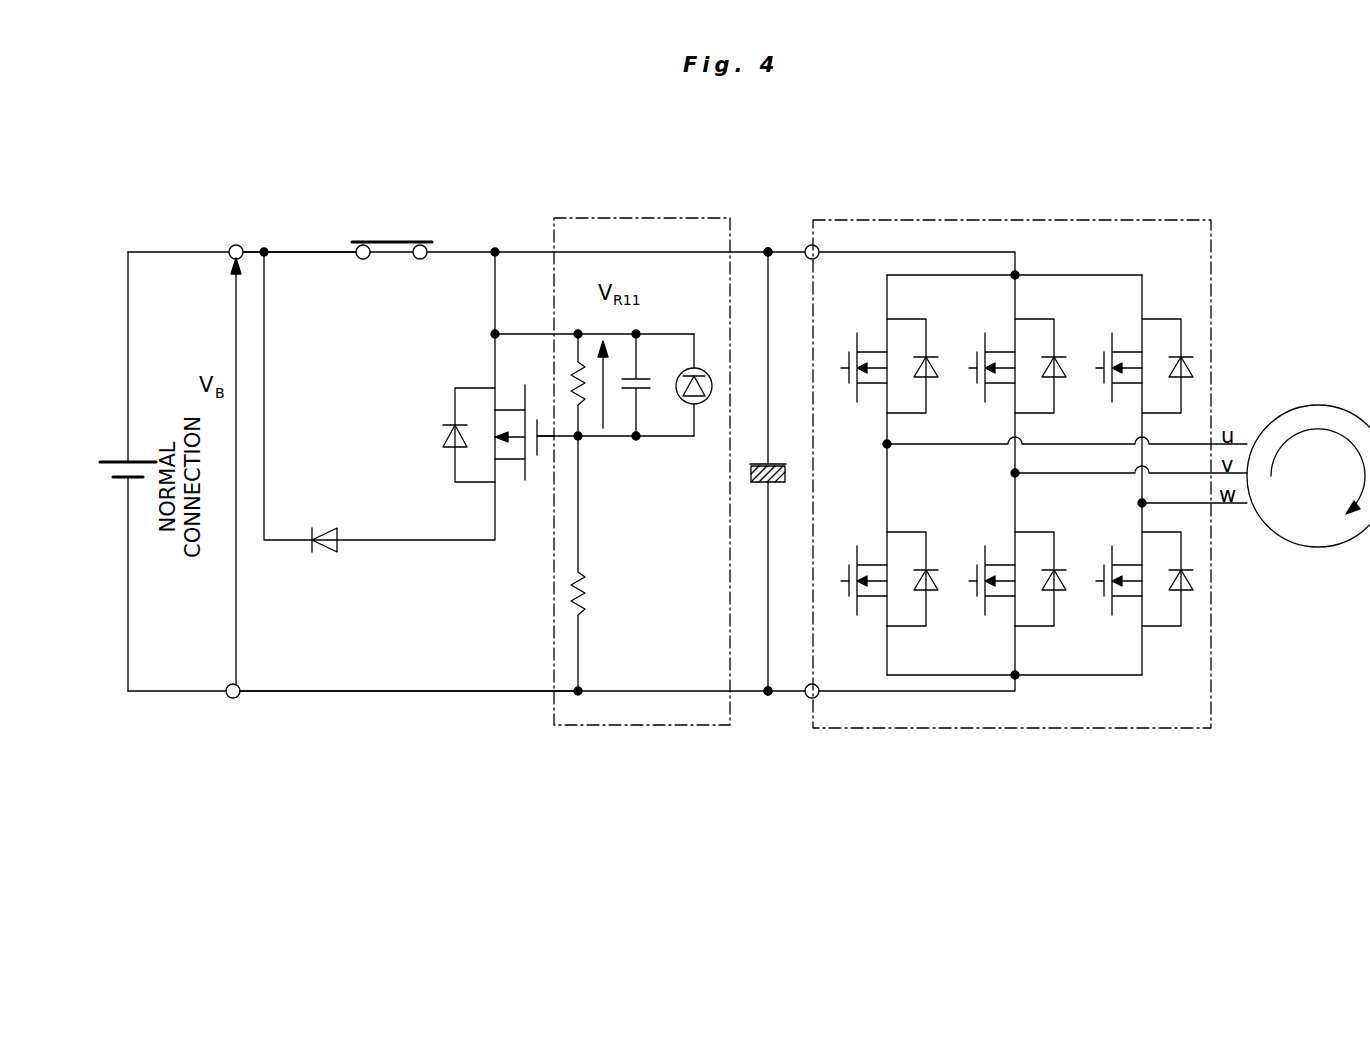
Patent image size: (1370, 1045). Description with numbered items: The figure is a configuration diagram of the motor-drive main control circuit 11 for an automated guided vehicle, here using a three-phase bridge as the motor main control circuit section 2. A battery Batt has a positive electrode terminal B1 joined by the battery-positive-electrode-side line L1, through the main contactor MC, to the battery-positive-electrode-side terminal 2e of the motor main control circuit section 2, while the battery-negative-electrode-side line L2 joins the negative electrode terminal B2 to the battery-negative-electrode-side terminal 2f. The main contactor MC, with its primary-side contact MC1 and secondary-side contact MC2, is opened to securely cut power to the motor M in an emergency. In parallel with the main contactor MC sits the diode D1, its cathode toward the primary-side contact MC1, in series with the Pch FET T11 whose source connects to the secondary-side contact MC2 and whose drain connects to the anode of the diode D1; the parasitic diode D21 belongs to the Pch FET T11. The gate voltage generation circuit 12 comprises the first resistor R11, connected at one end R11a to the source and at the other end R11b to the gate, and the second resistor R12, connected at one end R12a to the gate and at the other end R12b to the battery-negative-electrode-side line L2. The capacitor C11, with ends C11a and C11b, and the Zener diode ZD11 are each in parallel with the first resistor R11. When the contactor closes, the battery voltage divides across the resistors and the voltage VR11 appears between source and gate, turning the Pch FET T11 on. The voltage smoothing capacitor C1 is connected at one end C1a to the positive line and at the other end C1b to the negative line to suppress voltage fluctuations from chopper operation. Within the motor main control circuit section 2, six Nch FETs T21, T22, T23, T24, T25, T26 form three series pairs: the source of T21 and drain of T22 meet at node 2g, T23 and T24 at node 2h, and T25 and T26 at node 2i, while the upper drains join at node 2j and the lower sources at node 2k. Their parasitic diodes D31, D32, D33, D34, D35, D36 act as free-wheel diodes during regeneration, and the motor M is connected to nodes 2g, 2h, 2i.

The battery Batt is at (137, 462).
The positive electrode terminal B1 is at (236, 245).
The negative electrode terminal B2 is at (233, 698).
The battery-positive-electrode-side line L1 is at (290, 252).
The battery-negative-electrode-side line L2 is at (298, 691).
The main contactor MC is at (392, 242).
The primary-side contact MC1 is at (362, 245).
The secondary-side contact MC2 is at (426, 245).
The diode D1 is at (320, 553).
The parasitic diode D21 is at (445, 432).
The Pch FET T11 is at (525, 480).
The gate voltage generation circuit 12 is at (620, 215).
The first resistor R11 is at (575, 365).
The one end of first resistor R11a is at (578, 345).
The other end of first resistor R11b is at (580, 440).
The voltage of first resistor VR11 is at (616, 320).
The second resistor R12 is at (576, 594).
The one end of second resistor R12a is at (580, 452).
The other end of second resistor R12b is at (580, 676).
The capacitor C11 is at (637, 440).
The one end of capacitor C11a is at (640, 362).
The other end of capacitor C11b is at (641, 447).
The Zener diode ZD11 is at (701, 368).
The voltage smoothing capacitor C1 is at (760, 462).
The one end of voltage smoothing capacitor C1a is at (768, 268).
The other end of voltage smoothing capacitor C1b is at (768, 676).
The motor main control circuit section 2 is at (1082, 218).
The motor-drive main control circuit 11 is at (1036, 172).
The battery-positive-electrode-side terminal 2e is at (812, 245).
The battery-negative-electrode-side terminal 2f is at (812, 698).
The node 2g is at (884, 445).
The node 2h is at (1012, 473).
The node 2i is at (1139, 503).
The node 2j is at (1019, 272).
The node 2k is at (1019, 678).
The Nch FET T21 is at (856, 340).
The Nch FET T22 is at (856, 553).
The Nch FET T23 is at (984, 340).
The Nch FET T24 is at (984, 553).
The Nch FET T25 is at (1111, 340).
The Nch FET T26 is at (1111, 553).
The parasitic diode D31 is at (928, 380).
The parasitic diode D32 is at (928, 593).
The parasitic diode D33 is at (1056, 380).
The parasitic diode D34 is at (1056, 593).
The parasitic diode D35 is at (1193, 368).
The parasitic diode D36 is at (1193, 580).
The motor M is at (1314, 405).